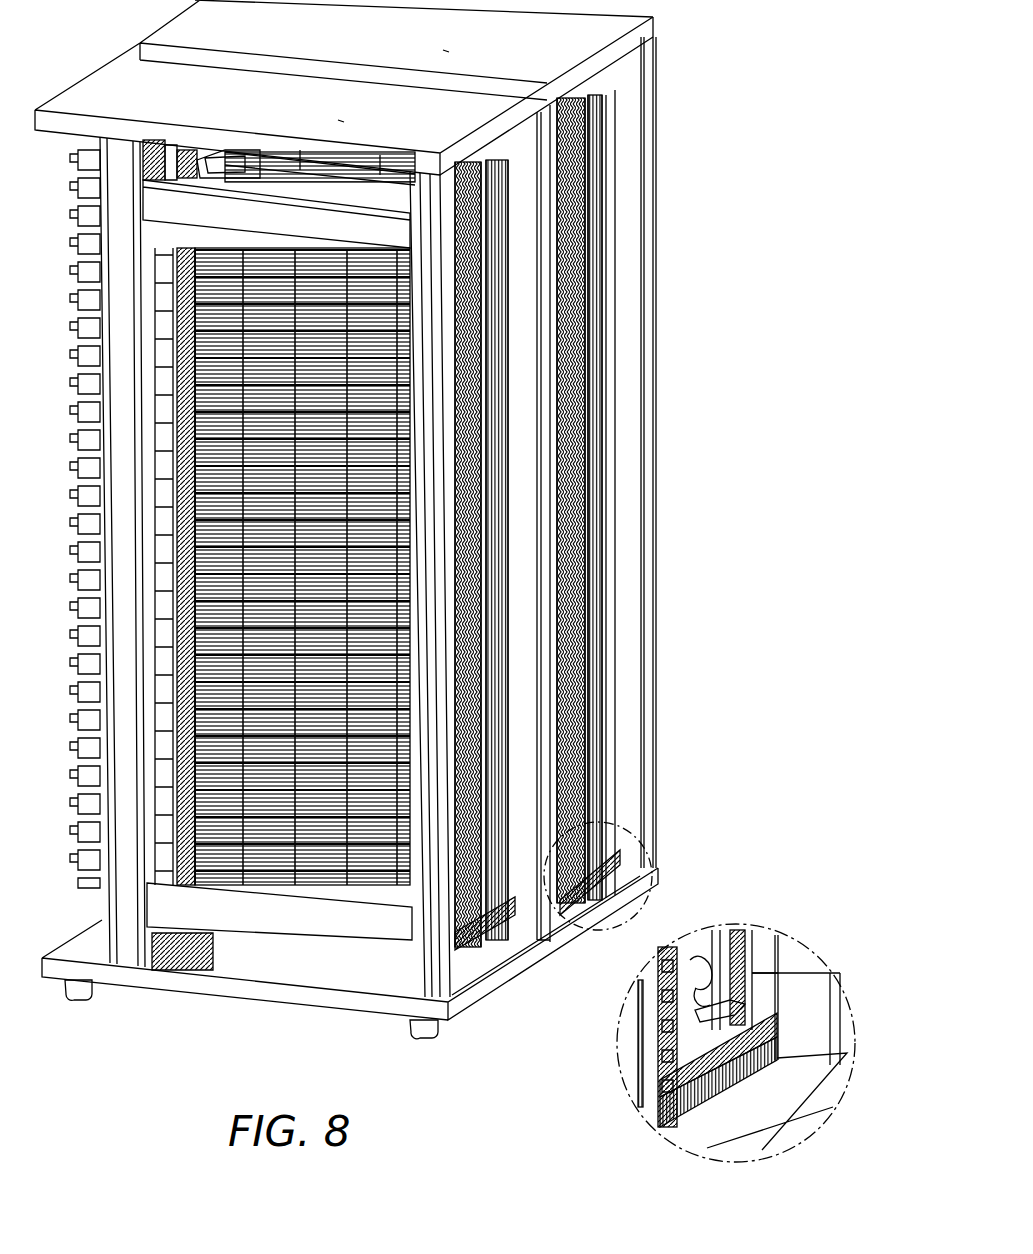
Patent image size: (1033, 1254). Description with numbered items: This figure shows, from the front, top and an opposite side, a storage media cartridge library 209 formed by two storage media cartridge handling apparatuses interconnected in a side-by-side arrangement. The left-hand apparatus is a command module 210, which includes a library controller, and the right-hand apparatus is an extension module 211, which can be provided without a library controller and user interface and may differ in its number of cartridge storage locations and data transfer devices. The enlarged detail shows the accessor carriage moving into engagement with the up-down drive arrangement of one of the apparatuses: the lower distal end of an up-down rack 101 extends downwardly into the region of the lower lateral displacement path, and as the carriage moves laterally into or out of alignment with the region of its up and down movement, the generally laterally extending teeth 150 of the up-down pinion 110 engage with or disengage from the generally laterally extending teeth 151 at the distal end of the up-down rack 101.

The storage media cartridge library 209 is at (683, 226).
The extension module 211 is at (655, 95).
The command module 210 is at (125, 595).
The teeth of the up-down pinion 150 is at (690, 980).
The teeth of the up-down rack 151 is at (718, 988).
The up-down rack 101 is at (745, 1008).
The up-down pinion 110 is at (660, 1020).